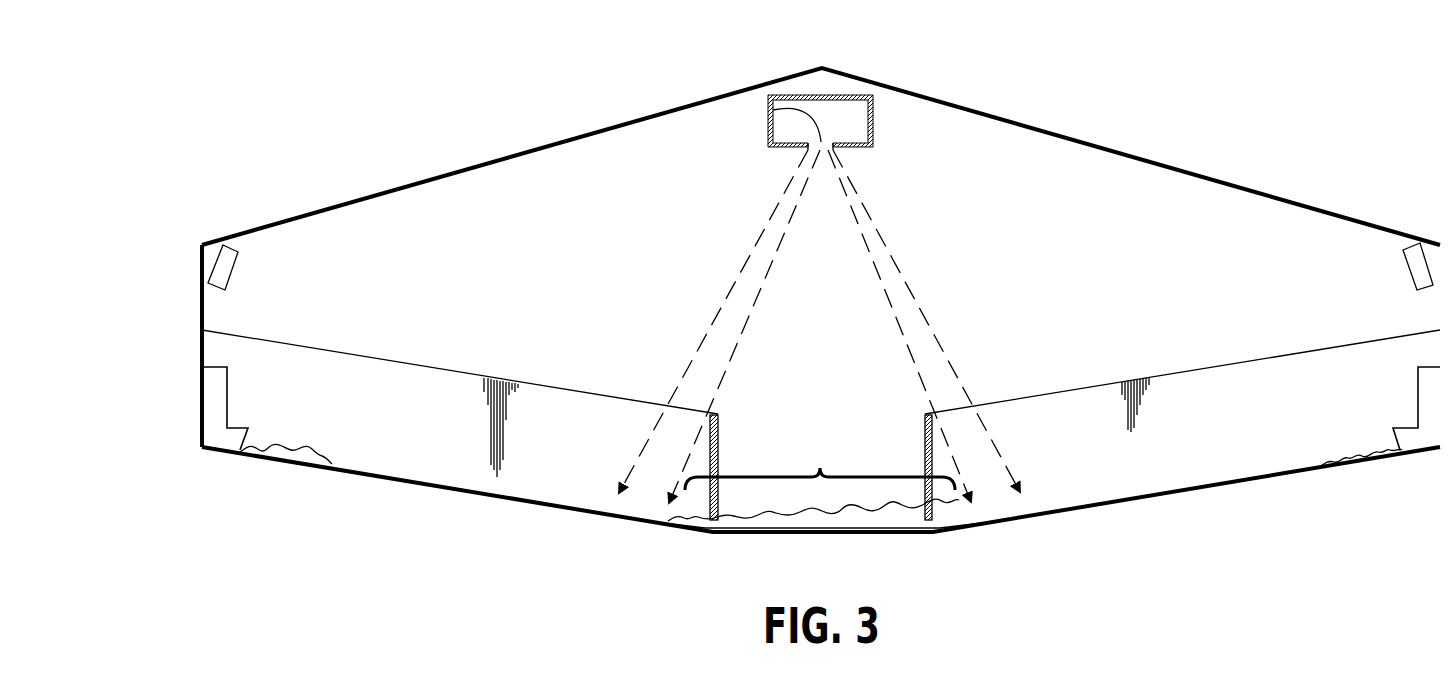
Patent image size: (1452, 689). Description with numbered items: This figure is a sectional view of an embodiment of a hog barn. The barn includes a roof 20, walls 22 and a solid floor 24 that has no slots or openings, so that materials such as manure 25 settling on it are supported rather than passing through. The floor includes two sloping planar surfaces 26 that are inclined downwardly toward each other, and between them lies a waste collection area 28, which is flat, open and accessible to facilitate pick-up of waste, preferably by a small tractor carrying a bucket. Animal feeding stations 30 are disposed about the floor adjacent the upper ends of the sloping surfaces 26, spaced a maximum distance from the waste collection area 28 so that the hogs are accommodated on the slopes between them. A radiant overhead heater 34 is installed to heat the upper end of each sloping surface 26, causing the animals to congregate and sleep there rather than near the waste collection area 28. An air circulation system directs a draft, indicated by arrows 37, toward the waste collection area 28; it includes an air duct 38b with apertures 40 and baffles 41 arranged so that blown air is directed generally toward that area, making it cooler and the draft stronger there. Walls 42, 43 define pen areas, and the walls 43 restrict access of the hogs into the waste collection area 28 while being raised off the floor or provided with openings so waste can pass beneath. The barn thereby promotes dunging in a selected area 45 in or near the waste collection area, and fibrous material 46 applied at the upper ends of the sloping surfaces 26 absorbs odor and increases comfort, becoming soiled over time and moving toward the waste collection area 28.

The roof 20 is at (510, 155).
The walls 22 is at (202, 318).
The floor 24 is at (1225, 477).
The manure 25 is at (853, 523).
The sloping planar surfaces 26 is at (1130, 493).
The waste collection area 28 is at (785, 533).
The animal feeding stations 30 is at (222, 382).
The radiant overhead heater 34 is at (234, 267).
The arrows indicating draft 37 is at (928, 322).
The air duct 38b is at (842, 95).
The apertures 40 is at (773, 108).
The baffles 41 is at (835, 150).
The walls 42 is at (1205, 368).
The walls 43 is at (922, 430).
The selected dunging area 45 is at (820, 460).
The fibrous material 46 is at (270, 445).